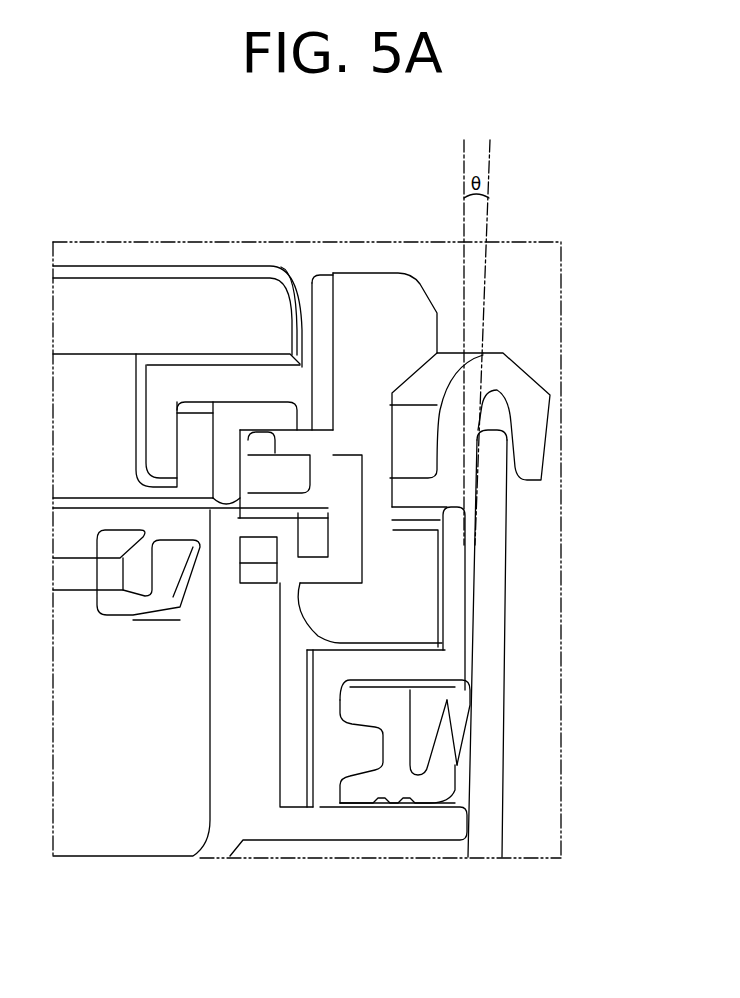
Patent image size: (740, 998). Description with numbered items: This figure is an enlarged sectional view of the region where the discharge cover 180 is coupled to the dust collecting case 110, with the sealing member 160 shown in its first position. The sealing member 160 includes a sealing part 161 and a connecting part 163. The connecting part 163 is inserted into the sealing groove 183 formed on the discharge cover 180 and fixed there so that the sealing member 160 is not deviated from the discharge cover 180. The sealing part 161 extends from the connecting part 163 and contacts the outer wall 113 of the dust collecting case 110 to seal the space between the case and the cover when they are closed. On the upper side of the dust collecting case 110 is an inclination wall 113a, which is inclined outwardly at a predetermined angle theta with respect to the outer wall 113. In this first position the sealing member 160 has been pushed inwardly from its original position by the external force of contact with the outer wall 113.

The dust collecting case 110 is at (433, 643).
The outer wall 113 is at (492, 830).
The inclination wall 113a is at (492, 582).
The discharge cover 180 is at (552, 376).
The sealing groove 183 is at (484, 795).
The sealing member 160 is at (450, 915).
The sealing part 161 is at (450, 762).
The connecting part 163 is at (393, 762).